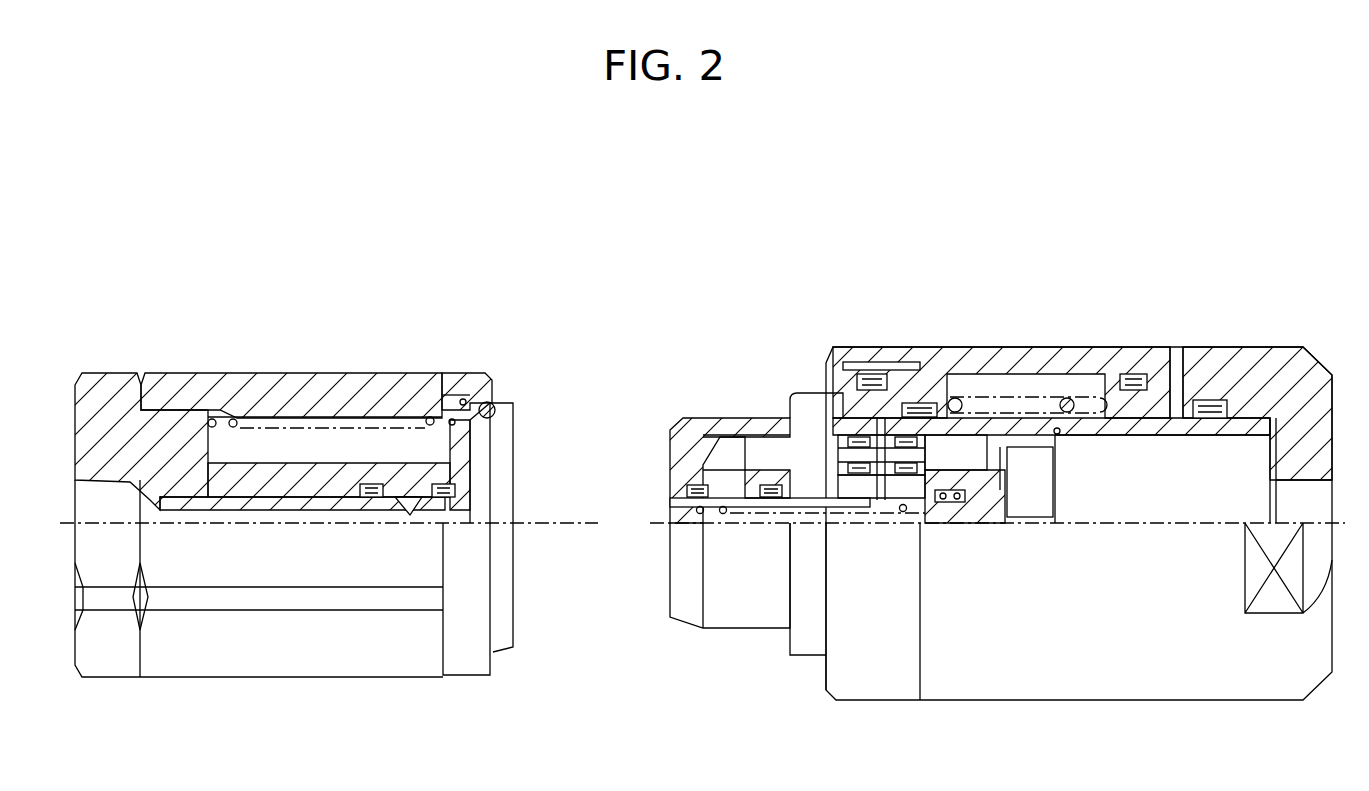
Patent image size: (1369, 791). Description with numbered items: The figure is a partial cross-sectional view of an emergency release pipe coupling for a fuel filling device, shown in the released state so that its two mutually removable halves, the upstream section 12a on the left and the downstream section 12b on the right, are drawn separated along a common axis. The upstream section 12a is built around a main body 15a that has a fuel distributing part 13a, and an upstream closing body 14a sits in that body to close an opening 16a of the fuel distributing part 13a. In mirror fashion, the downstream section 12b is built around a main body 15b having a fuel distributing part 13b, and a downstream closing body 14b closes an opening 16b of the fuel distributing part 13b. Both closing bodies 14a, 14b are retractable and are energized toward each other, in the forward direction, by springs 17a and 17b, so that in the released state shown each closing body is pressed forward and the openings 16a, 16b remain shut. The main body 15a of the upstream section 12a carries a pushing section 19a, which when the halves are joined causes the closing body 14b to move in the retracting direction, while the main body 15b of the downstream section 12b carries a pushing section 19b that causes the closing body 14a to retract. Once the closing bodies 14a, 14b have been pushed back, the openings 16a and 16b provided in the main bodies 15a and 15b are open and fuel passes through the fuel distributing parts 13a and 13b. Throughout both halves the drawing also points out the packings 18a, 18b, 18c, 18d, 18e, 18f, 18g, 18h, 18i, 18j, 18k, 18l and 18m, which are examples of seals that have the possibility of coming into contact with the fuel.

The upstream section 12a is at (509, 357).
The downstream section 12b is at (671, 410).
The fuel distributing part 13a is at (233, 523).
The fuel distributing part 13b is at (813, 437).
The upstream closing body 14a is at (470, 450).
The downstream closing body 14b is at (670, 508).
The main body 15a is at (207, 373).
The main body 15b is at (1053, 347).
The opening 16a is at (400, 513).
The opening 16b is at (735, 490).
The spring 17a is at (430, 417).
The spring 17b is at (700, 512).
The packing 18a is at (370, 486).
The packing 18b is at (440, 485).
The packing 18c is at (696, 484).
The packing 18d is at (770, 484).
The packing 18e is at (860, 436).
The packing 18f is at (915, 402).
The packing 18g is at (857, 474).
The packing 18h is at (895, 474).
The packing 18i is at (953, 503).
The packing 18j is at (878, 373).
The packing 18k is at (903, 436).
The packing 18l is at (1133, 373).
The packing 18m is at (1210, 399).
The pushing section 19a is at (470, 508).
The pushing section 19b is at (670, 457).